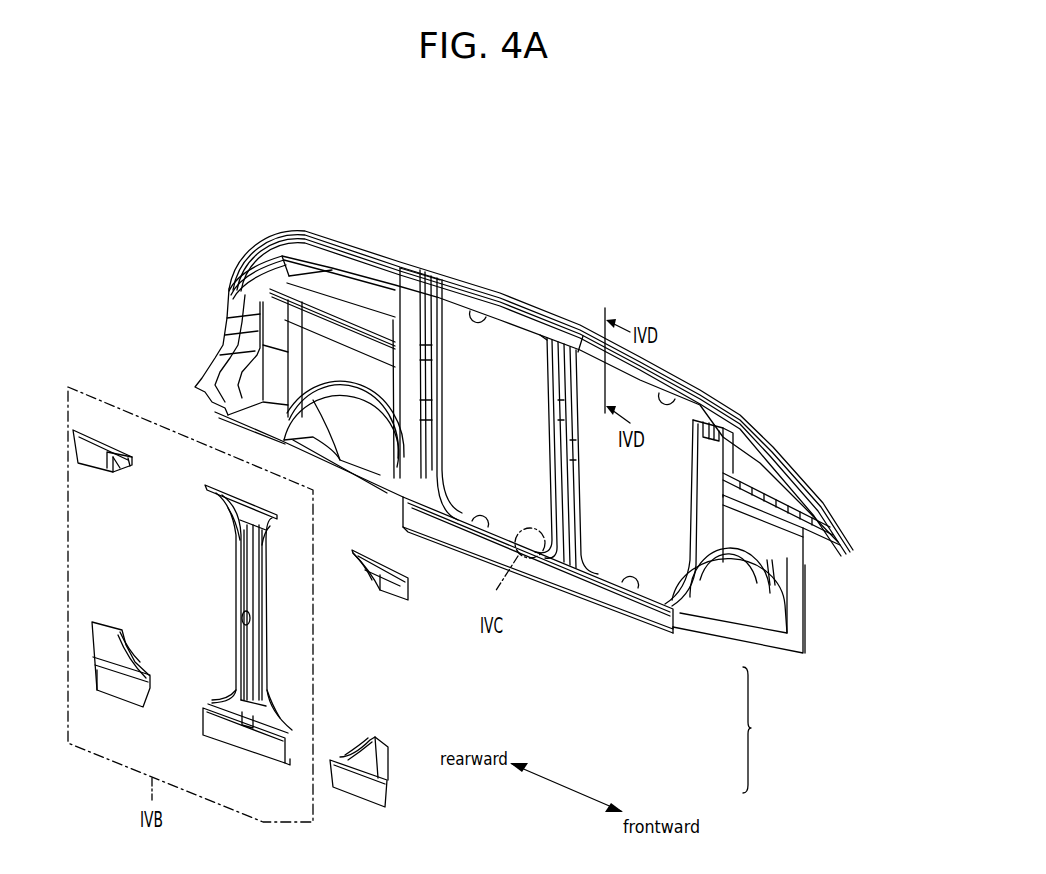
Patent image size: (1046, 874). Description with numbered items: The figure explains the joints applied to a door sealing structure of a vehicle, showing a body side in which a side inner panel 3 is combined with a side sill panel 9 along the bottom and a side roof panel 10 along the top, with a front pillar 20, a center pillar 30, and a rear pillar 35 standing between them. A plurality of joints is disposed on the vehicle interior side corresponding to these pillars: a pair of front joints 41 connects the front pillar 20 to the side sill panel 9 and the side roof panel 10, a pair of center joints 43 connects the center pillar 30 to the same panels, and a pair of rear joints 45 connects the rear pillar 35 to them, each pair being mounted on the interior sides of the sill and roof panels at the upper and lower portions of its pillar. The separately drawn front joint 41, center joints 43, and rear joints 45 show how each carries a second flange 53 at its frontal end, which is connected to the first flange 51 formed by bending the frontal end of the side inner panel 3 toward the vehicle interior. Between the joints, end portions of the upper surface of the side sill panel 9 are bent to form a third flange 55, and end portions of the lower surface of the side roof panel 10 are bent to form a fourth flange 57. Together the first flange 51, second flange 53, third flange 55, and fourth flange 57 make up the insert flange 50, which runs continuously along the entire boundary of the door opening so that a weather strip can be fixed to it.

The side inner panel 3 is at (263, 567).
The side sill panel 9 is at (588, 600).
The side roof panel 10 is at (530, 320).
The front pillar 20 is at (717, 415).
The center pillar 30 is at (567, 345).
The rear pillar 35 is at (420, 290).
The front joint 41 is at (400, 595).
The center joint 43 is at (243, 627).
The rear joint 45 is at (97, 463).
The insert flange 50 is at (747, 730).
The first flange 51 is at (233, 610).
The second flange 53 is at (228, 508).
The third flange 55 is at (477, 522).
The fourth flange 57 is at (489, 318).